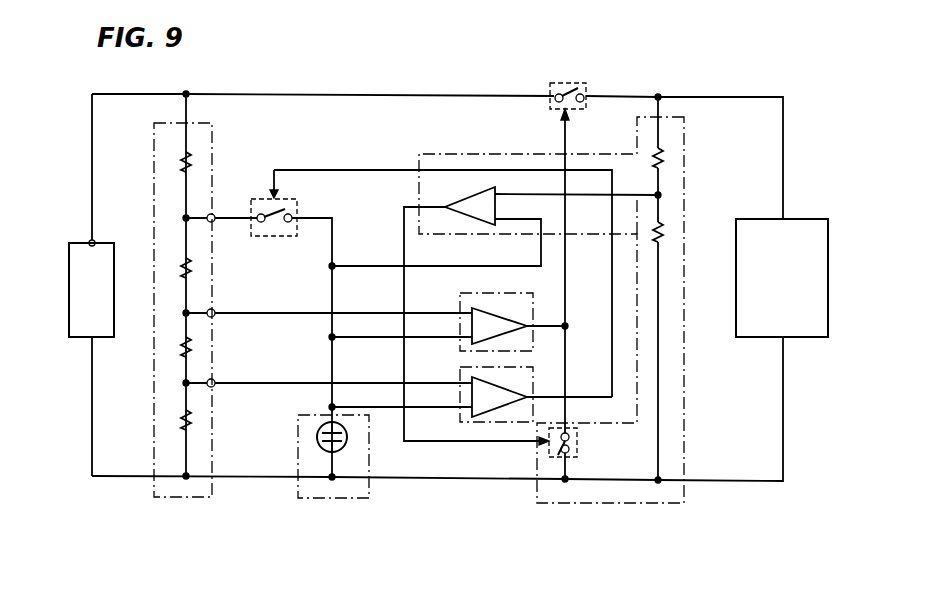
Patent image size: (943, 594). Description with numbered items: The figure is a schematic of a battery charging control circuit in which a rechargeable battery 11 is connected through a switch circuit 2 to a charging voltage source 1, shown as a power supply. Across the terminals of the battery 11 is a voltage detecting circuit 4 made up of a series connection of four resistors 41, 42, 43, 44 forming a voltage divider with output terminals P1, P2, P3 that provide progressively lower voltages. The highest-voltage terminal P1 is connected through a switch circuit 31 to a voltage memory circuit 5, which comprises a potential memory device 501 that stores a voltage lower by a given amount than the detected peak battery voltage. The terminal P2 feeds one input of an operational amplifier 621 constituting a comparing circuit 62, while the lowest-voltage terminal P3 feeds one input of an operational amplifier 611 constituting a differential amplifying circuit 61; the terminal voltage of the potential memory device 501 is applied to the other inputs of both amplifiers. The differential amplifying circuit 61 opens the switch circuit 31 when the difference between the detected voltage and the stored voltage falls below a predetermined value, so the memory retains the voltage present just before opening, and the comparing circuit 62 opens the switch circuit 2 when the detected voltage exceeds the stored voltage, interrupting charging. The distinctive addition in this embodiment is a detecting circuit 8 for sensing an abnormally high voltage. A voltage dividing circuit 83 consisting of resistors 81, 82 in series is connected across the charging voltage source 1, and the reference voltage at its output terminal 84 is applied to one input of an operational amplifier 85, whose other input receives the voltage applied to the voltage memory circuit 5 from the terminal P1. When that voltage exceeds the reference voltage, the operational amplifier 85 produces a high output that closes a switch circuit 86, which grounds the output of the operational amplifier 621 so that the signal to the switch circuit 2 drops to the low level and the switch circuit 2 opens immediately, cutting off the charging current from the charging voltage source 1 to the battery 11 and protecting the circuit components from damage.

The charging voltage source 1 is at (760, 219).
The switch circuit 2 is at (576, 83).
The voltage detecting circuit 4 is at (212, 140).
The resistor 41 is at (184, 168).
The resistor 42 is at (183, 268).
The resistor 43 is at (184, 355).
The resistor 44 is at (184, 433).
The output terminal P1 is at (214, 213).
The output terminal P2 is at (214, 310).
The output terminal P3 is at (214, 381).
The rechargeable battery 11 is at (78, 338).
The switch circuit 31 is at (274, 237).
The voltage memory circuit 5 is at (372, 458).
The potential memory device 501 is at (318, 443).
The differential amplifying circuit 61 is at (460, 419).
The operational amplifier 611 is at (488, 392).
The comparing circuit 62 is at (460, 303).
The operational amplifier 621 is at (488, 320).
The detecting circuit 8 is at (628, 504).
The resistor 81 is at (660, 166).
The resistor 82 is at (660, 240).
The voltage dividing circuit 83 is at (648, 208).
The output terminal 84 is at (656, 193).
The operational amplifier 85 is at (470, 202).
The switch circuit 86 is at (578, 446).